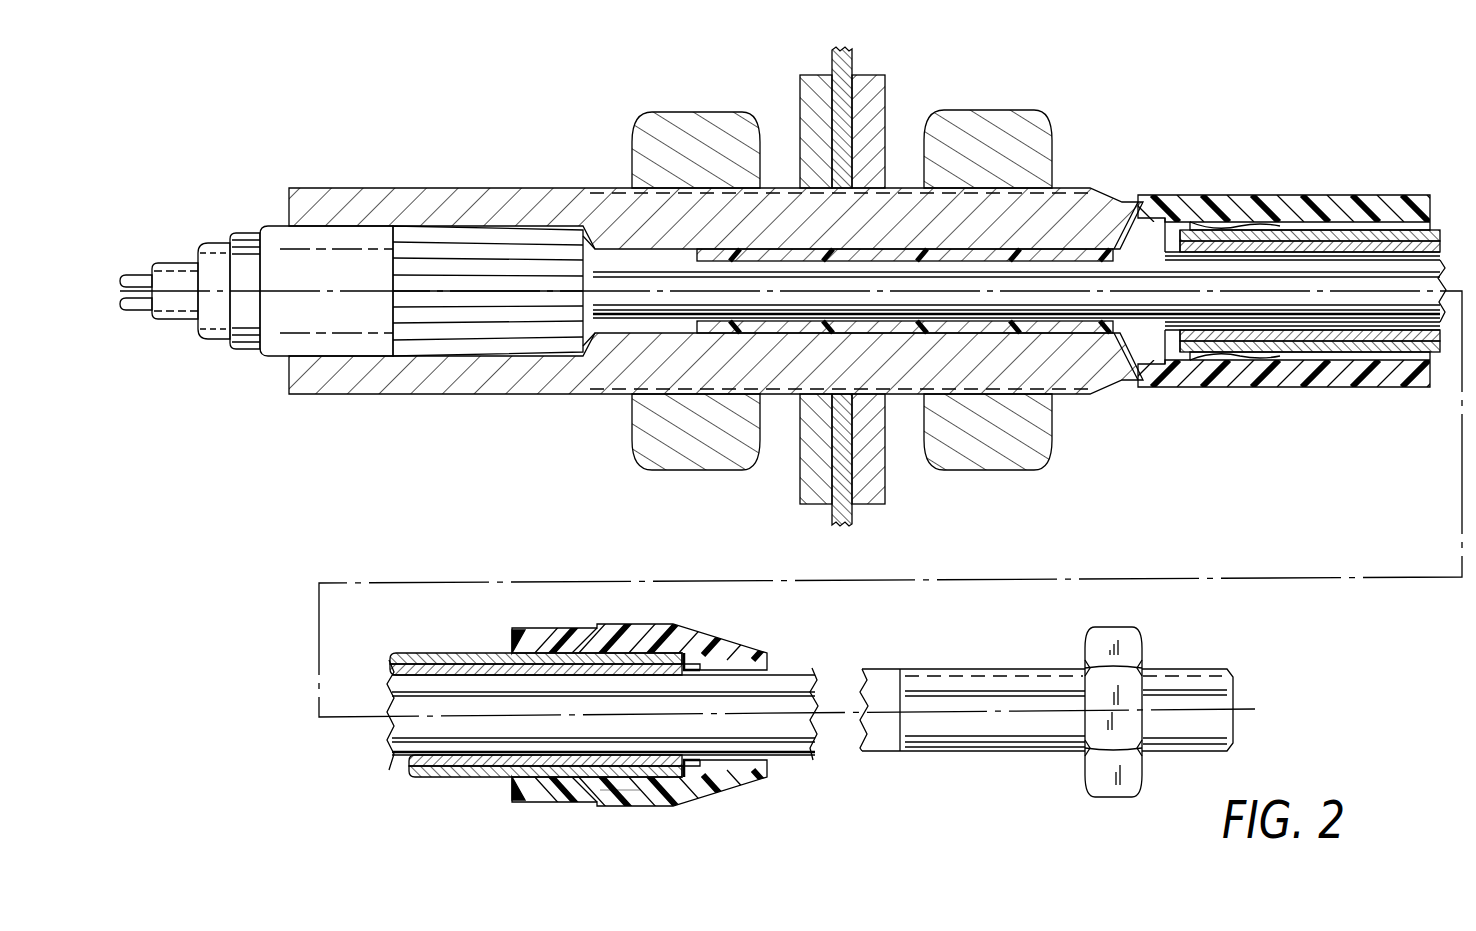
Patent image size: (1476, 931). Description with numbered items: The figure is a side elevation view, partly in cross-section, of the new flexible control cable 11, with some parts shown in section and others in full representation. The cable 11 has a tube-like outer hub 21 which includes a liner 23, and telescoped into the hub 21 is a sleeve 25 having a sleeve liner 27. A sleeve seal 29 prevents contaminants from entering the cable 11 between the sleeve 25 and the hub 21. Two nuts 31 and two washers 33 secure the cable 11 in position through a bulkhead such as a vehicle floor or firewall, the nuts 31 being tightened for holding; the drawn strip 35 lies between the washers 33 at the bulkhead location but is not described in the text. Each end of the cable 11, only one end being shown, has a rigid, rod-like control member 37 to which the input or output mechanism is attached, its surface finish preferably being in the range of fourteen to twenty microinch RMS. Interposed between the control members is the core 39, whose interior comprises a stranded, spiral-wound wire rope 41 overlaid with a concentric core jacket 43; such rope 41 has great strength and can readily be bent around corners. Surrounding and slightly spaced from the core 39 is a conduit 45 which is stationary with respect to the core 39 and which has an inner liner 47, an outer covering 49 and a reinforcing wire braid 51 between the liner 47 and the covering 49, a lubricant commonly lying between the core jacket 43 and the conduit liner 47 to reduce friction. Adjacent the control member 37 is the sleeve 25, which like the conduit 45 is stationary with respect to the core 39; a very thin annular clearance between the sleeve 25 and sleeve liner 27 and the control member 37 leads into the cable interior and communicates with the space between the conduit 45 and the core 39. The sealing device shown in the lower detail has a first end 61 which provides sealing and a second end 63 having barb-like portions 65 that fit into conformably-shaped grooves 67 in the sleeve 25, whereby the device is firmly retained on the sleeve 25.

The control cable 11 is at (492, 460).
The outer hub 21 is at (490, 186).
The liner 23 is at (1052, 247).
The sleeve 25 is at (1440, 230).
The sleeve liner 27 is at (1441, 260).
The sleeve seal 29 is at (1293, 195).
The nut 31 is at (707, 111).
The washer 33 is at (812, 75).
The gasket strip 35 is at (852, 517).
The control member 37 is at (884, 669).
The core 39 is at (195, 318).
The wire rope 41 is at (126, 276).
The core jacket 43 is at (172, 262).
The conduit 45 is at (197, 335).
The inner liner 47 is at (212, 250).
The outer covering 49 is at (315, 240).
The reinforcing wire braid 51 is at (247, 240).
The first end 61 is at (726, 647).
The second end 63 is at (546, 628).
The barb-like portions 65 is at (578, 630).
The grooves 67 is at (558, 773).